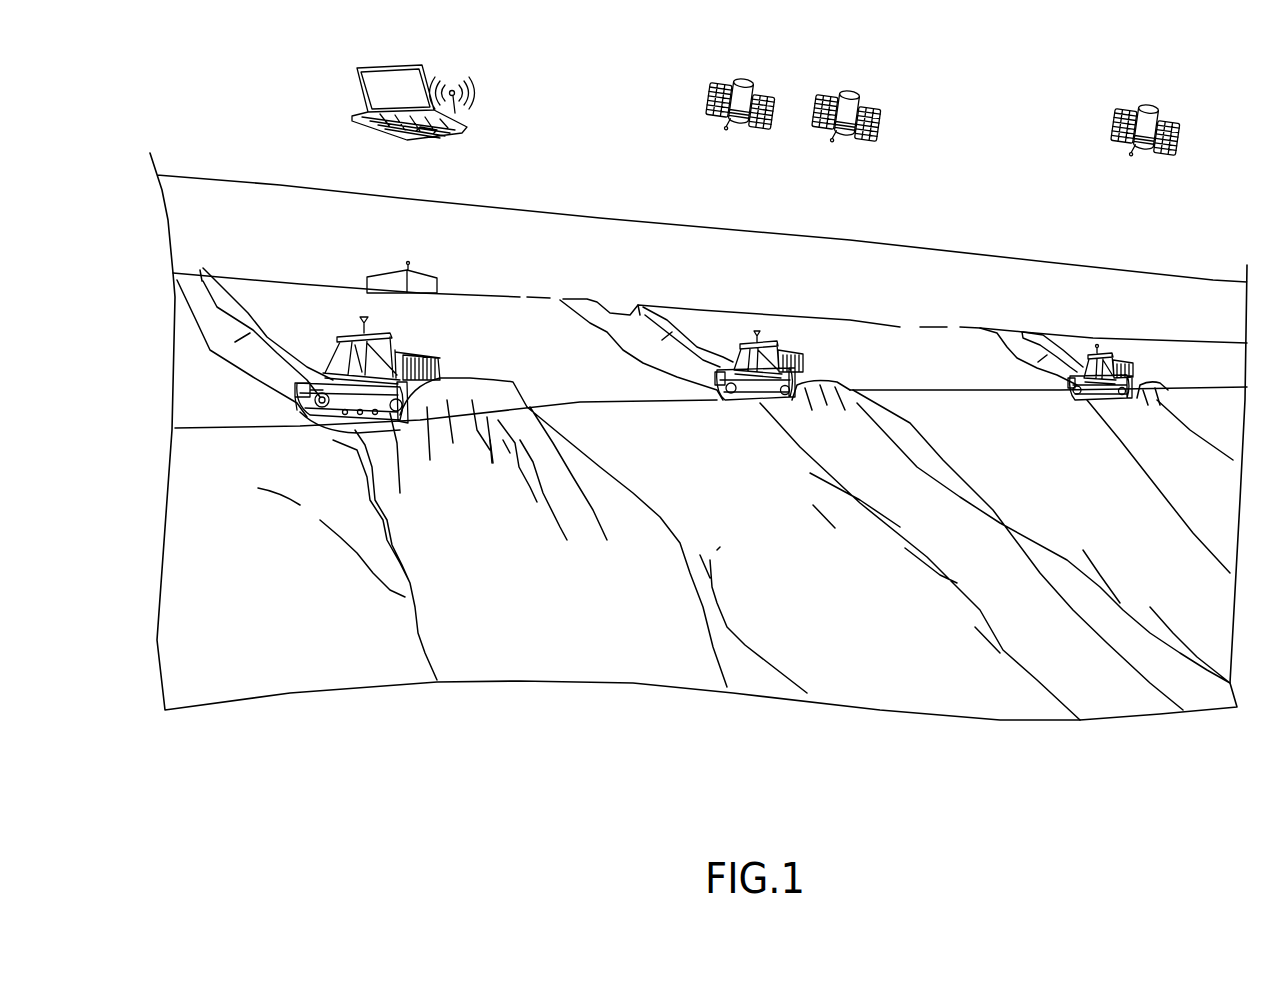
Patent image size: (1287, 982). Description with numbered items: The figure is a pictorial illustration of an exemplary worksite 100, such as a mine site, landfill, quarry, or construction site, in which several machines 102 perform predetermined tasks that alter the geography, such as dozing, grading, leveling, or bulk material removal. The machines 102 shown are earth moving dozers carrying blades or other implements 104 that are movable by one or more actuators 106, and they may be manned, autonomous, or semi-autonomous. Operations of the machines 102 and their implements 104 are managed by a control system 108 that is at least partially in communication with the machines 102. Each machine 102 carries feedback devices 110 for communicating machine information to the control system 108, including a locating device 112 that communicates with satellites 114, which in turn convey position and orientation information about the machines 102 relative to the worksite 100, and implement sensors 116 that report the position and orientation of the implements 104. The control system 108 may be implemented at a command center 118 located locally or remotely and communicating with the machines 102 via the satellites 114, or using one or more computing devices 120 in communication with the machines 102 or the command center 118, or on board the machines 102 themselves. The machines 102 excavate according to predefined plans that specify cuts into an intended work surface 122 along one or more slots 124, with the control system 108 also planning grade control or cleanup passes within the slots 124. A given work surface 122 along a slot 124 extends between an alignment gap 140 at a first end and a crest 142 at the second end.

The worksite 100 is at (1045, 203).
The machine 102 is at (303, 415).
The implement 104 is at (497, 387).
The actuator 106 is at (744, 354).
The control system 108 is at (399, 162).
The feedback device 110 is at (744, 339).
The locating device 112 is at (744, 339).
The satellite 114 is at (745, 82).
The implement sensor 116 is at (405, 363).
The command center 118 is at (390, 258).
The computing device 120 is at (442, 56).
The work surface 122 is at (237, 343).
The slot 124 is at (193, 341).
The alignment gap 140 is at (184, 262).
The crest 142 is at (192, 415).